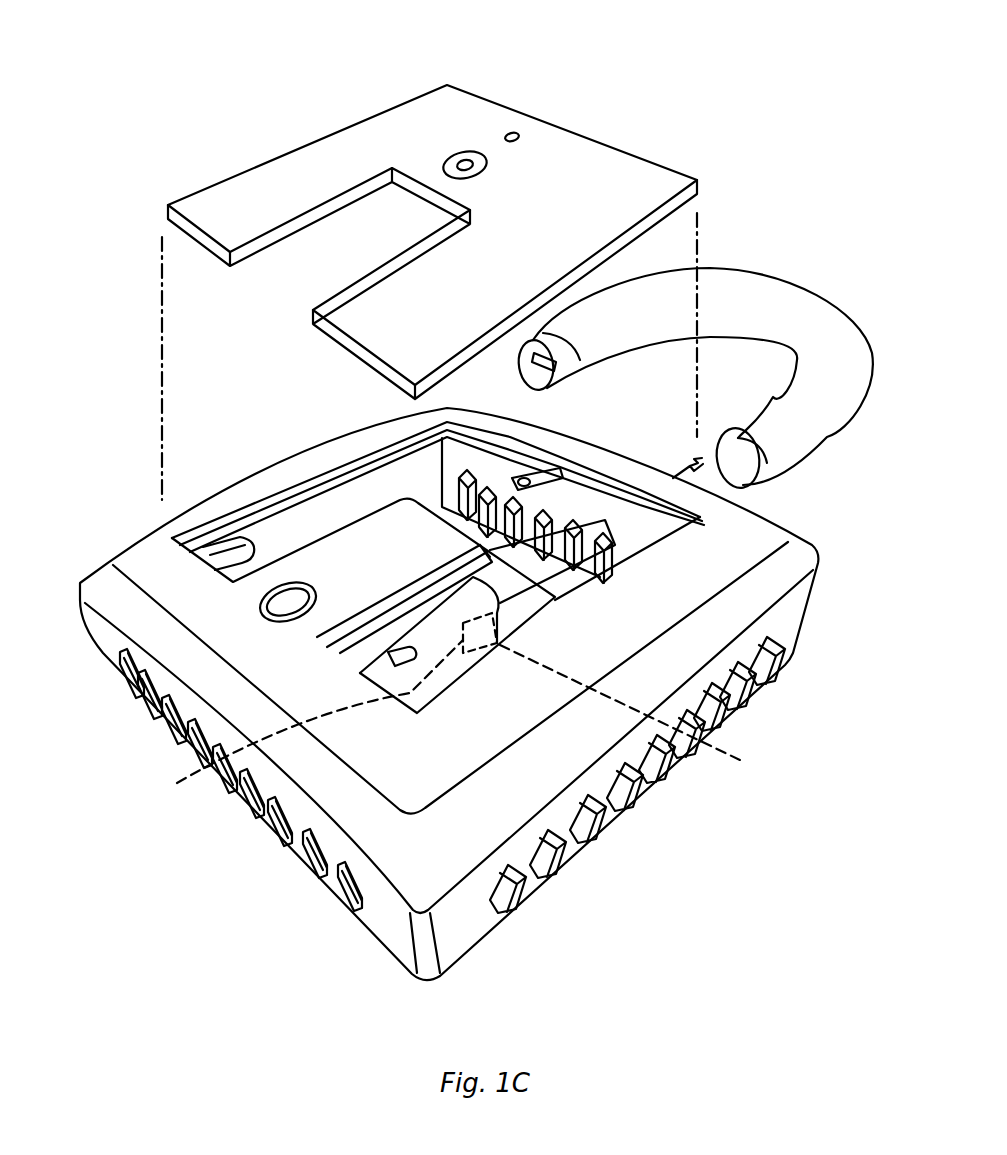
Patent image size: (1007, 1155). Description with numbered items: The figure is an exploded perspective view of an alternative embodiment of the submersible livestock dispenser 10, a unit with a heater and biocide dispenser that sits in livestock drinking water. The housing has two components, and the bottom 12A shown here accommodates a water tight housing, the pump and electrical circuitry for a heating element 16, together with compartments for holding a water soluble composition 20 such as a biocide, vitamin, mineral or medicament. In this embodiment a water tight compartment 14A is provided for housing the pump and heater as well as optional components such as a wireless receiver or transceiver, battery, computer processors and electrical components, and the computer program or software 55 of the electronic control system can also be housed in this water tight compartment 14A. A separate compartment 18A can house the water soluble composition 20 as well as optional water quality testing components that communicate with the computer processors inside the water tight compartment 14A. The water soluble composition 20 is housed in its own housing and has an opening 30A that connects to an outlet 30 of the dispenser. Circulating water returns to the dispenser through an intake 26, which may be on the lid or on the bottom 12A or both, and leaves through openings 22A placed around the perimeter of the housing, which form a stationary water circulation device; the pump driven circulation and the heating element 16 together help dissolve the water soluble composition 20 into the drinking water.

The submersible livestock dispenser 10 is at (693, 128).
The bottom 12A is at (508, 723).
The water tight compartment 14A is at (455, 652).
The heating element 16 is at (633, 716).
The compartment 18A is at (578, 607).
The water soluble composition 20 is at (743, 293).
The openings 22A is at (447, 487).
The intake 26 is at (460, 162).
The outlet 30 is at (232, 545).
The opening 30A is at (550, 372).
The computer program or software 55 is at (308, 728).